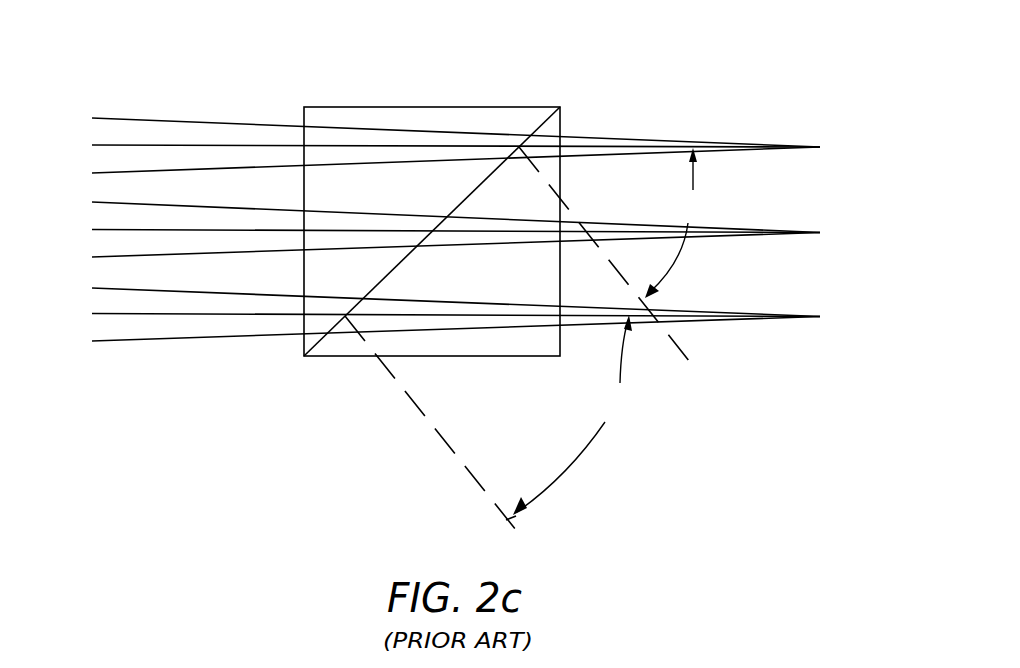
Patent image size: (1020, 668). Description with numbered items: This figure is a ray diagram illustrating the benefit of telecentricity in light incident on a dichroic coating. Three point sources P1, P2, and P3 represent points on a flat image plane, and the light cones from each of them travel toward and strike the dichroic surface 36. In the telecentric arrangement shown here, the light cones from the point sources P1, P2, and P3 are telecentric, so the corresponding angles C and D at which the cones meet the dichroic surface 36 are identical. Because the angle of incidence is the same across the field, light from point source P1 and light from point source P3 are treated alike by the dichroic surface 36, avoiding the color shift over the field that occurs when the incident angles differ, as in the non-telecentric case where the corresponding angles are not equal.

The dichroic surface 36 is at (530, 137).
The point source P1 is at (475, 145).
The point source P2 is at (475, 229).
The point source P3 is at (475, 314).
The angle C is at (671, 223).
The angle D is at (572, 415).